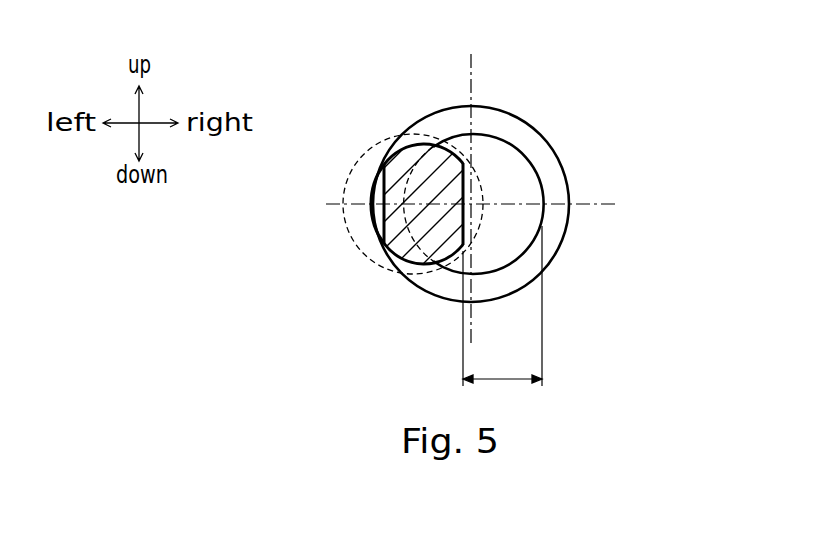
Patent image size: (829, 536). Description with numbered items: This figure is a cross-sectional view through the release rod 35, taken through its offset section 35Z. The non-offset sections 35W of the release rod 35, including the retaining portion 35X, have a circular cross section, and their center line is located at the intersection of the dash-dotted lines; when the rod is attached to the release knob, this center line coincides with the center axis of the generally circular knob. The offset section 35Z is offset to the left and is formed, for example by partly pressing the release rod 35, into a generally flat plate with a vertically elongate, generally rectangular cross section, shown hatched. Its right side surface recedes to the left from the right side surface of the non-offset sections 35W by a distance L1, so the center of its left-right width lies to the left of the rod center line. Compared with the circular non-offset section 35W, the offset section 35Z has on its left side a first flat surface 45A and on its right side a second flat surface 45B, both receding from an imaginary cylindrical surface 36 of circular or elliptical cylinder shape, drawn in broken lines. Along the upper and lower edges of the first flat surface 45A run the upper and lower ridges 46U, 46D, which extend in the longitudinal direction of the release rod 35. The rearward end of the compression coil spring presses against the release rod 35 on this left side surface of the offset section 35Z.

The release rod 35 is at (524, 100).
The retaining portion 35X is at (560, 226).
The non-offset sections 35W is at (515, 140).
The offset section 35Z is at (404, 251).
The imaginary cylindrical surface 36 is at (339, 216).
The first flat surface 45A is at (376, 183).
The second flat surface 45B is at (455, 176).
The upper ridge 46U is at (379, 157).
The lower ridge 46D is at (379, 239).
The distance L1 is at (502, 306).